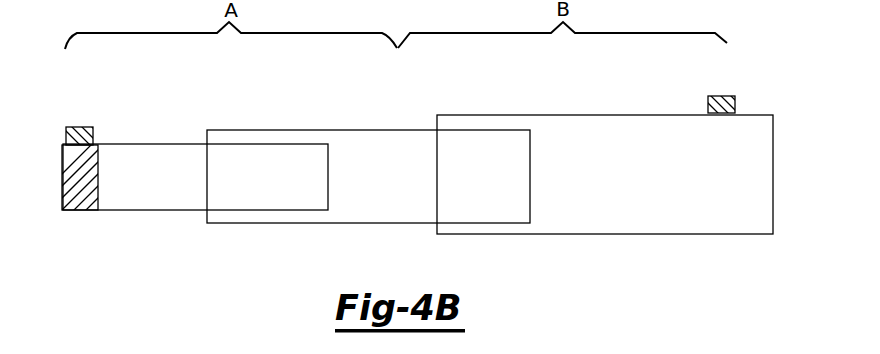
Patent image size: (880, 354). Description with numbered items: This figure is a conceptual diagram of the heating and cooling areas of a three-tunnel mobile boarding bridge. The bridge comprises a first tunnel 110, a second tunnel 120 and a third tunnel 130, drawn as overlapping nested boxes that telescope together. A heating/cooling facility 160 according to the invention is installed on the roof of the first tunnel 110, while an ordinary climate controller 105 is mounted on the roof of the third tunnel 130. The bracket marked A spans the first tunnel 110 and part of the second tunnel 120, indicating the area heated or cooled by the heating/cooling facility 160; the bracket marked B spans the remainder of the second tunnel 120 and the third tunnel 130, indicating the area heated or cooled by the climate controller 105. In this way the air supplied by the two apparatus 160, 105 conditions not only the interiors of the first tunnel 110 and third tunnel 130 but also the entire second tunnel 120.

The climate controller 105 is at (722, 96).
The first tunnel 110 is at (163, 143).
The second tunnel 120 is at (368, 130).
The third tunnel 130 is at (608, 115).
The heating/cooling facility 160 is at (78, 127).